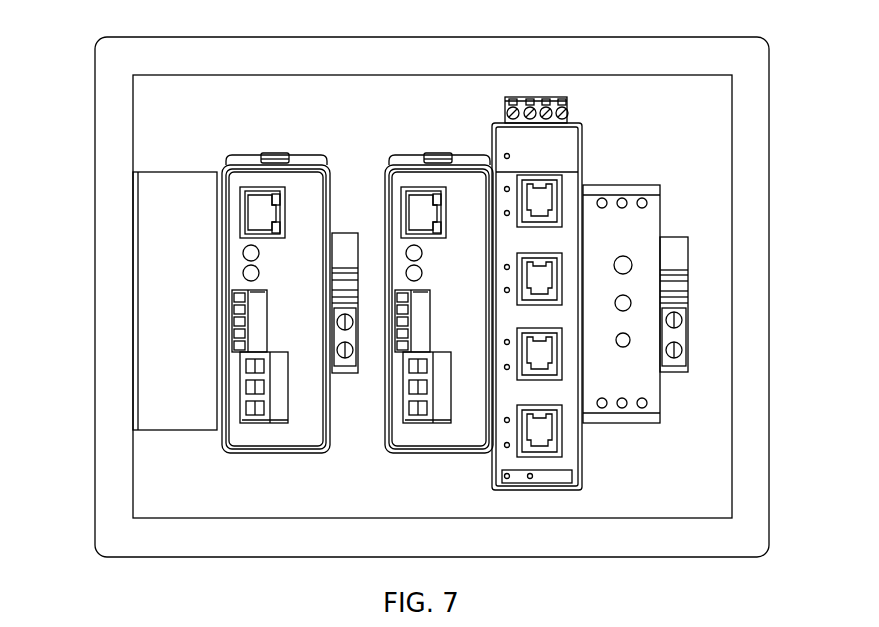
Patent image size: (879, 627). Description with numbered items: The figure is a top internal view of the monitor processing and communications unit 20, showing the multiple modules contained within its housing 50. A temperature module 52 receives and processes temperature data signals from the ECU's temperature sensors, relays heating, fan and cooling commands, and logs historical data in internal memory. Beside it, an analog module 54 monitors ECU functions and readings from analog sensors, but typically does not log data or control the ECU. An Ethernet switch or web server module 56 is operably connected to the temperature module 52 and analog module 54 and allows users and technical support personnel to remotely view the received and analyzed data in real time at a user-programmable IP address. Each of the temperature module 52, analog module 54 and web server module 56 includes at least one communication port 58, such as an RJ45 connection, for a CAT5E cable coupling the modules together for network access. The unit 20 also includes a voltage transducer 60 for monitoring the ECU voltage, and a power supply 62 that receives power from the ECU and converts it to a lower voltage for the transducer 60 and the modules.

The monitor processing and communications unit 20 is at (64, 203).
The housing 50 is at (406, 297).
The temperature module 52 is at (258, 440).
The analog module 54 is at (406, 446).
The Ethernet switch or web server module 56 is at (551, 488).
The communication port 58 is at (419, 275).
The voltage transducer 60 is at (652, 304).
The power supply 62 is at (127, 301).